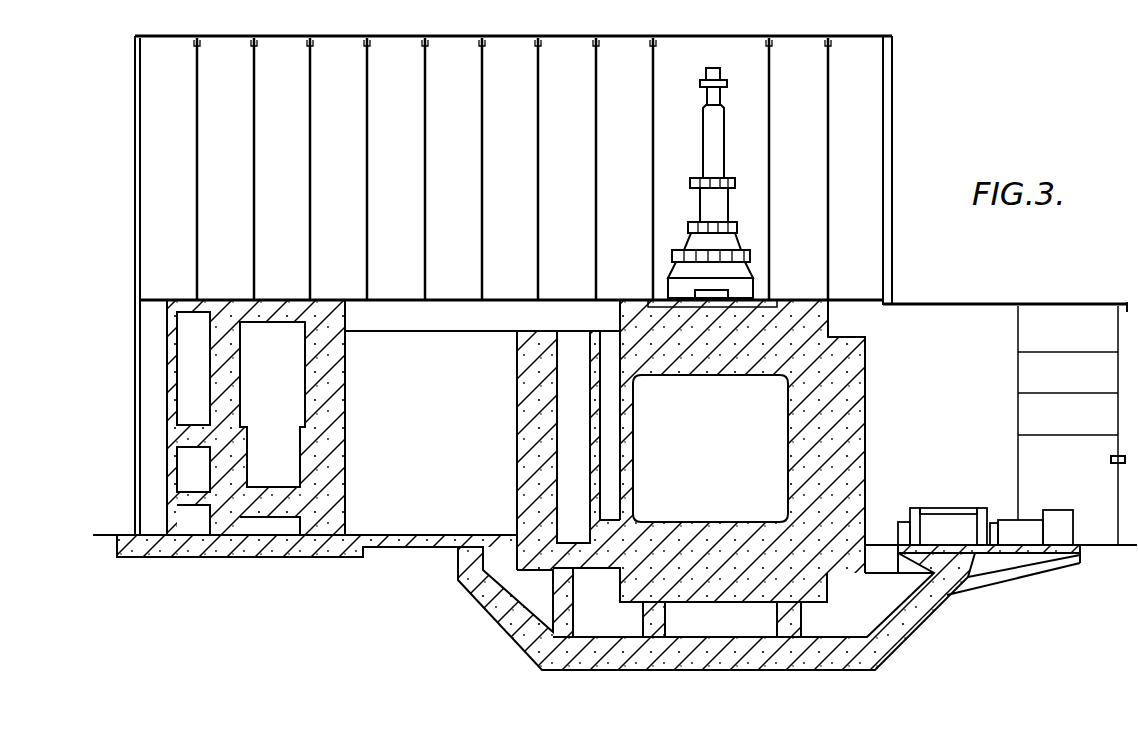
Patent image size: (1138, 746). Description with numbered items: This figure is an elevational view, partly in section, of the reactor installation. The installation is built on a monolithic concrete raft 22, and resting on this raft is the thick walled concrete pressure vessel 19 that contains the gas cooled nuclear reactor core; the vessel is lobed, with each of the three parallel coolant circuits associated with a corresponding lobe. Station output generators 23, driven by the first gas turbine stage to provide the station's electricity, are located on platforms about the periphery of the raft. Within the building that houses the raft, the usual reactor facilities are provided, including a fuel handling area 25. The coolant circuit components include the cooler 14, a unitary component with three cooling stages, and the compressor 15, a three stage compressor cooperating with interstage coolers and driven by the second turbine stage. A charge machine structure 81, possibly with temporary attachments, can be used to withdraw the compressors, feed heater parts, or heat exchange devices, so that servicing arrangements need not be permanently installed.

The charge machine structure 81 is at (718, 209).
The concrete pressure vessel 19 is at (838, 375).
The fuel handling area 25 is at (277, 461).
The cooler 14 is at (570, 373).
The compressor 15 is at (607, 423).
The monolithic concrete raft 22 is at (927, 603).
The station output generator 23 is at (992, 528).